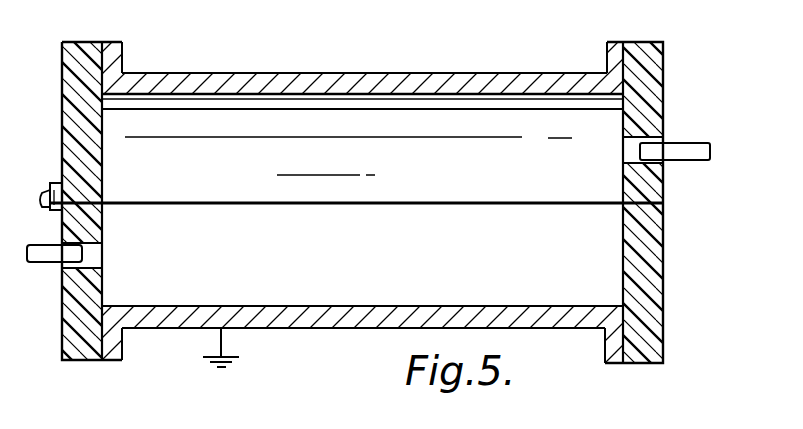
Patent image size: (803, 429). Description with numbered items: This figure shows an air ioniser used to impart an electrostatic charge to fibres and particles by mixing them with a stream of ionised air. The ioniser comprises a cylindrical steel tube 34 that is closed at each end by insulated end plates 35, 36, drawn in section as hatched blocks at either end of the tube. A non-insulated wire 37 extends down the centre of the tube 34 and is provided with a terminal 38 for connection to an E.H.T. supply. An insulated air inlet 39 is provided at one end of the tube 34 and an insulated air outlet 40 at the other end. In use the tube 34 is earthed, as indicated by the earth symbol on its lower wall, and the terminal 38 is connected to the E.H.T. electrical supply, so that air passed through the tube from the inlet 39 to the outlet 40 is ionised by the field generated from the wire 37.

The cylindrical steel tube 34 is at (329, 327).
The insulated end plate 35 is at (646, 360).
The insulated end plate 36 is at (88, 356).
The non-insulated wire 37 is at (568, 207).
The terminal 38 is at (50, 184).
The insulated air inlet 39 is at (680, 143).
The insulated air outlet 40 is at (48, 263).